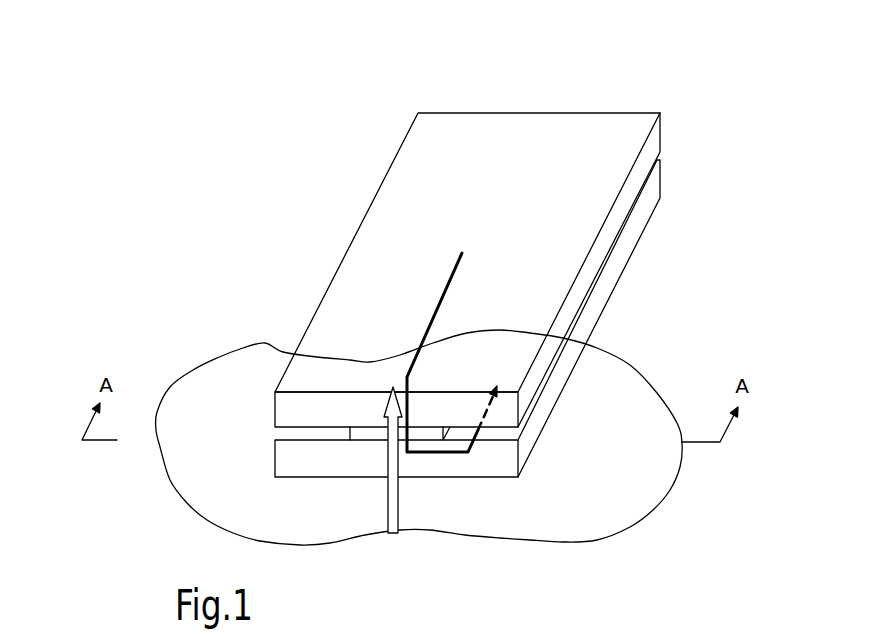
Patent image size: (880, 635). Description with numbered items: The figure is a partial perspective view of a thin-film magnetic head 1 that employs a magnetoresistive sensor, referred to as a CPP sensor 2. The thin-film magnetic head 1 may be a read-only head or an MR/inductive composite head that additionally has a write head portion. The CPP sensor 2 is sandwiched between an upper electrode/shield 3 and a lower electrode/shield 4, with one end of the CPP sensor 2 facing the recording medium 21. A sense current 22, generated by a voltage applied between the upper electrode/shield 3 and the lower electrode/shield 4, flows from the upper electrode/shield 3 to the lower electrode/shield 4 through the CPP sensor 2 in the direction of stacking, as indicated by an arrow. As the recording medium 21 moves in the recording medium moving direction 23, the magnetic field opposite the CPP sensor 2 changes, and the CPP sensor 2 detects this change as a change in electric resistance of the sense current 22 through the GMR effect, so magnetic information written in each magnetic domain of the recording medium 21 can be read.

The thin-film magnetic head 1 is at (504, 243).
The CPP sensor 2 is at (367, 433).
The upper electrode/shield 3 is at (630, 147).
The lower electrode/shield 4 is at (622, 263).
The recording medium 21 is at (637, 368).
The sense current 22 is at (447, 282).
The recording medium moving direction 23 is at (398, 487).